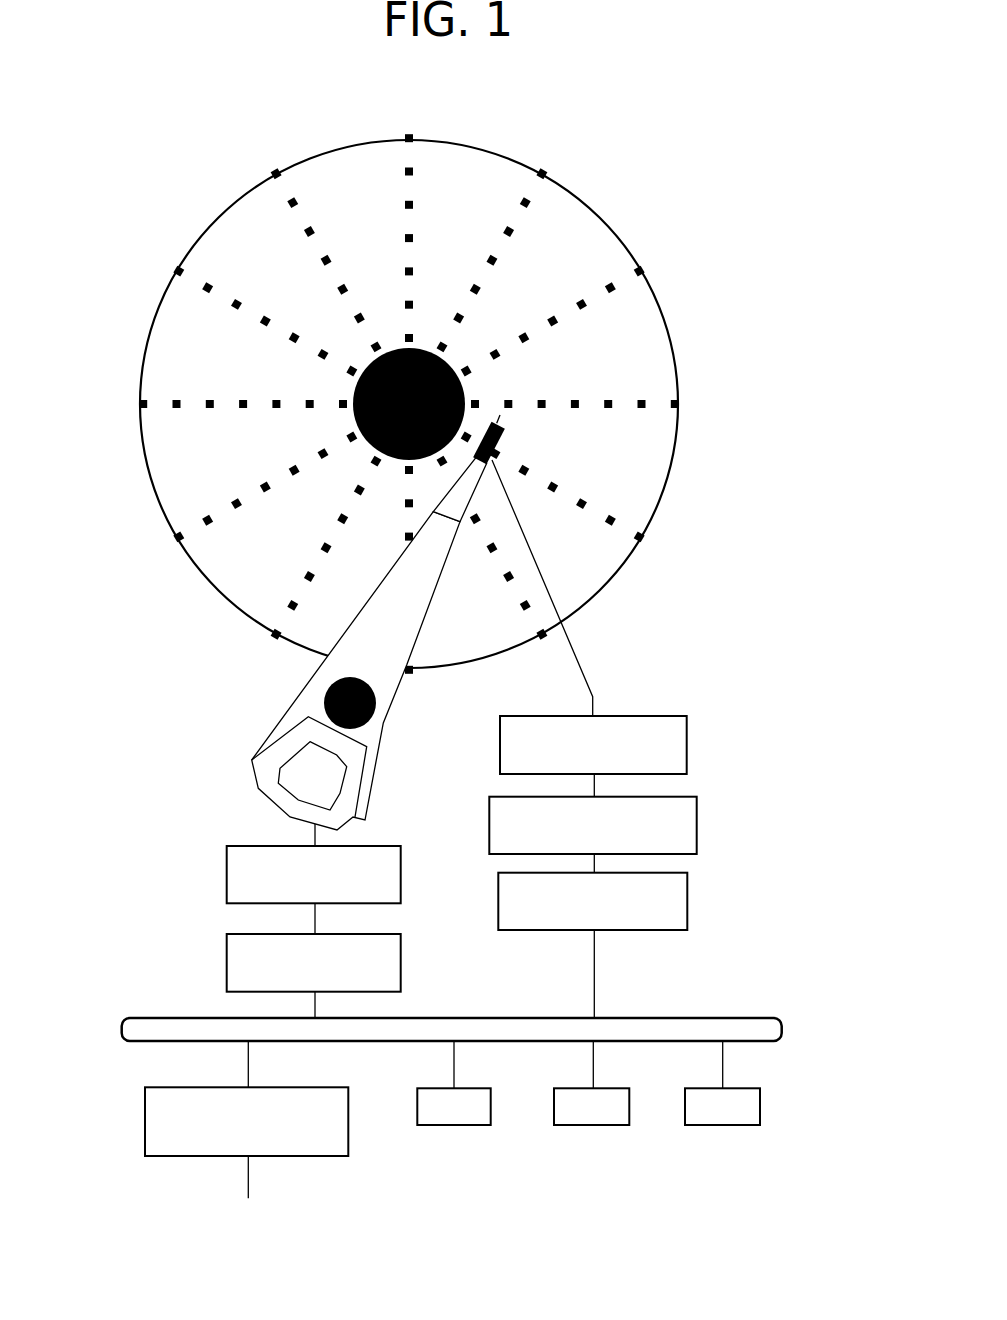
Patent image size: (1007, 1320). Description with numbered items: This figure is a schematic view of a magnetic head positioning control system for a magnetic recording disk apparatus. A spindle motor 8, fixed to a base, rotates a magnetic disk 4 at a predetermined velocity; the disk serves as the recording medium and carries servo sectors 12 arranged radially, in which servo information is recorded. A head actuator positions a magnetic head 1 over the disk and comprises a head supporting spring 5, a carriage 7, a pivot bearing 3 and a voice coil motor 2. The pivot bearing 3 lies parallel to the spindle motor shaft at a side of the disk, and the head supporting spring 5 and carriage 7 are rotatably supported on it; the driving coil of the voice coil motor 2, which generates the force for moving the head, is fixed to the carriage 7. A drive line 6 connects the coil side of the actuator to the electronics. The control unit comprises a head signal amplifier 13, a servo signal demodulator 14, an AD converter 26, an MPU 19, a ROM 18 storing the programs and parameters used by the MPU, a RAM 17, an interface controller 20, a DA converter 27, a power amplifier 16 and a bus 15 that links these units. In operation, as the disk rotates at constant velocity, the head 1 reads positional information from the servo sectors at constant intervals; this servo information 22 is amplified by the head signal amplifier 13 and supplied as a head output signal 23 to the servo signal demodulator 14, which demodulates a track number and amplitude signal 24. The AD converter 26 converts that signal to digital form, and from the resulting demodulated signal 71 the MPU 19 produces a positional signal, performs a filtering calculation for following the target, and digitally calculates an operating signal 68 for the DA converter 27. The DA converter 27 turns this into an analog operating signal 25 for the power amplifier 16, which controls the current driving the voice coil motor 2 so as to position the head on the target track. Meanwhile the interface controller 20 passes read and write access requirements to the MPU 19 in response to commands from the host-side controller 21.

The magnetic head 1 is at (500, 437).
The voice coil motor 2 is at (257, 776).
The pivot bearing 3 is at (325, 695).
The magnetic disk 4 is at (672, 343).
The head supporting spring 5 is at (476, 478).
The drive wire 6 is at (310, 837).
The carriage 7 is at (402, 683).
The spindle motor 8 is at (367, 367).
The servo sectors 12 is at (625, 243).
The head signal amplifier 13 is at (687, 731).
The servo signal demodulator 14 is at (697, 815).
The bus 15 is at (757, 1017).
The power amplifier 16 is at (400, 856).
The RAM 17 is at (743, 1126).
The ROM 18 is at (607, 1126).
The MPU 19 is at (477, 1126).
The interface controller 20 is at (348, 1152).
The host-side controller 21 is at (387, 1227).
The servo information 22 is at (593, 706).
The head output signal 23 is at (594, 787).
The track number and amplitude signal 24 is at (594, 865).
The analog operating signal 25 is at (315, 918).
The AD converter 26 is at (687, 900).
The DA converter 27 is at (400, 948).
The operating signal 68 is at (310, 1010).
The demodulated signal 71 is at (594, 970).